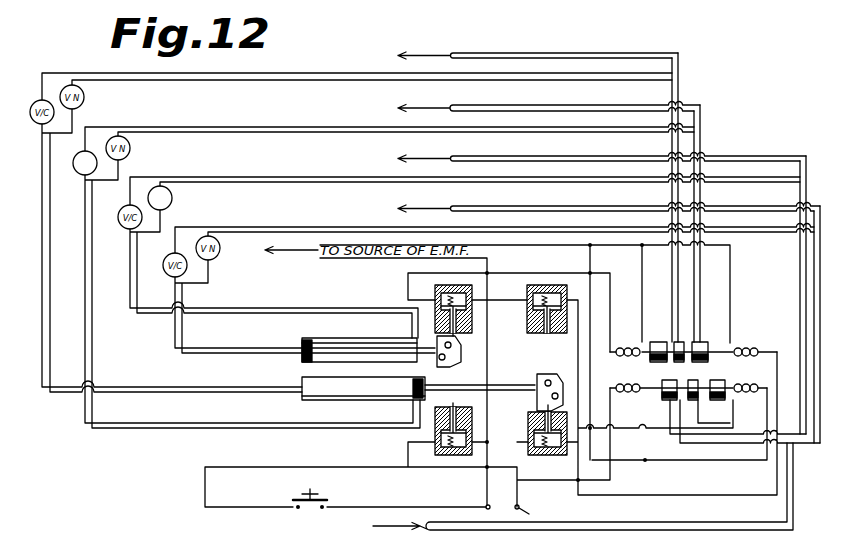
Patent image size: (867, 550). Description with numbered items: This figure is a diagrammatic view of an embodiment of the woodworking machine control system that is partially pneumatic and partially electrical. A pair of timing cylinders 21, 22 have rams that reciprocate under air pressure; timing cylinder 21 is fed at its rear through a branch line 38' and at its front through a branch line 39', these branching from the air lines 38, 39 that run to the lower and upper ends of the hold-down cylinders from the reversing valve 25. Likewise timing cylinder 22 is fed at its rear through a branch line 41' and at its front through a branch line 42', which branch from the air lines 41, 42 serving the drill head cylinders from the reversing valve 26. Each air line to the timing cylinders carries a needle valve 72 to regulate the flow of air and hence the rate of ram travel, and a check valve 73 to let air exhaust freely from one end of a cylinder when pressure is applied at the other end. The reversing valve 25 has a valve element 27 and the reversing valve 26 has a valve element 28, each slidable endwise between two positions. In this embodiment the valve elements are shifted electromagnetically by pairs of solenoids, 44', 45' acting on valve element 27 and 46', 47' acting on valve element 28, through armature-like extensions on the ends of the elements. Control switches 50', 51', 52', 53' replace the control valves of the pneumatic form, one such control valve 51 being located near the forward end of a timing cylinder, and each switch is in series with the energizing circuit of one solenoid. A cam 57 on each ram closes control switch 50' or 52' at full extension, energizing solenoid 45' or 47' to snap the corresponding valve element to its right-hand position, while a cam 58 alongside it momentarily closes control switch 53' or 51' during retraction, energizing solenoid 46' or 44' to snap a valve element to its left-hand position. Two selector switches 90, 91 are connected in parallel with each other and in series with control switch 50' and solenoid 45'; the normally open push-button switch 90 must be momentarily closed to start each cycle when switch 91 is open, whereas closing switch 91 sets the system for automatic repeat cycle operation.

The branch line 38' is at (477, 58).
The branch line 39' is at (488, 108).
The branch line 42' is at (541, 158).
The branch line 41' is at (548, 208).
The air lines 38 is at (692, 197).
The air lines 39 is at (713, 219).
The air lines 42 is at (796, 280).
The air lines 41 is at (807, 342).
The check valve 73 is at (82, 180).
The needle valve 72 is at (174, 201).
The timing cylinder 22 is at (304, 341).
The timing cylinder 21 is at (319, 399).
The control switch 51' is at (458, 320).
The control switch 52' is at (538, 320).
The control switch 53' is at (422, 429).
The control switch 50' is at (535, 426).
The cam 57 is at (456, 363).
The cam 58 is at (435, 361).
The control valve 51 is at (560, 392).
The solenoid 44' is at (627, 335).
The solenoid 45' is at (752, 335).
The solenoid 46' is at (628, 401).
The solenoid 47' is at (749, 401).
The reversing valve 25 is at (660, 340).
The valve element 27 is at (708, 340).
The reversing valve 26 is at (671, 396).
The valve element 28 is at (716, 399).
The selector switch 90 is at (302, 509).
The selector switch 91 is at (530, 514).